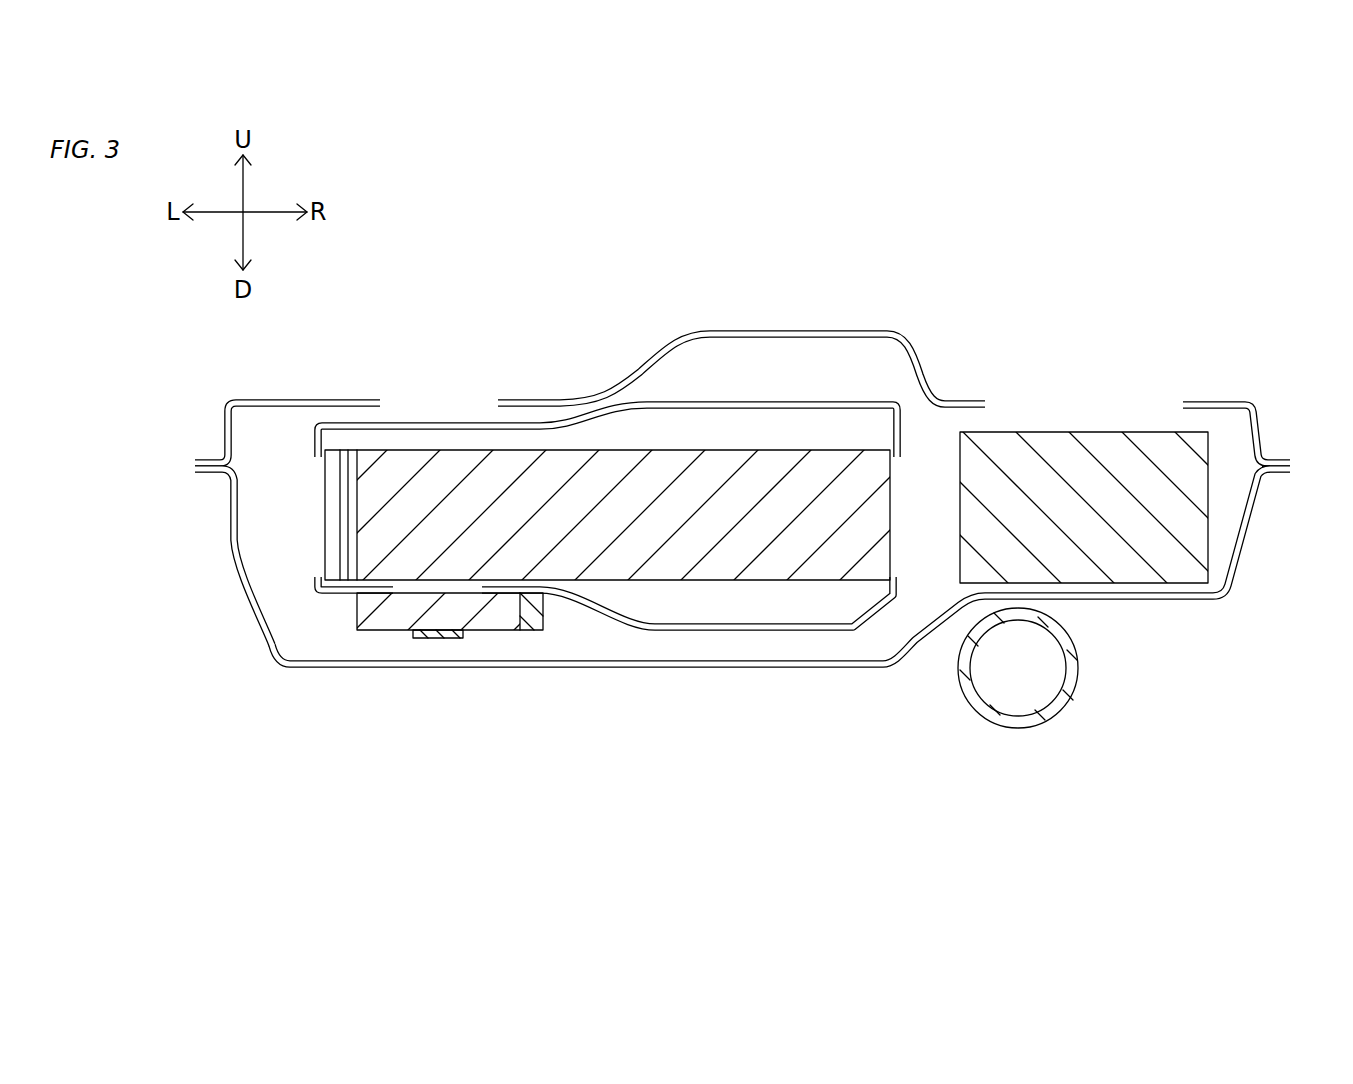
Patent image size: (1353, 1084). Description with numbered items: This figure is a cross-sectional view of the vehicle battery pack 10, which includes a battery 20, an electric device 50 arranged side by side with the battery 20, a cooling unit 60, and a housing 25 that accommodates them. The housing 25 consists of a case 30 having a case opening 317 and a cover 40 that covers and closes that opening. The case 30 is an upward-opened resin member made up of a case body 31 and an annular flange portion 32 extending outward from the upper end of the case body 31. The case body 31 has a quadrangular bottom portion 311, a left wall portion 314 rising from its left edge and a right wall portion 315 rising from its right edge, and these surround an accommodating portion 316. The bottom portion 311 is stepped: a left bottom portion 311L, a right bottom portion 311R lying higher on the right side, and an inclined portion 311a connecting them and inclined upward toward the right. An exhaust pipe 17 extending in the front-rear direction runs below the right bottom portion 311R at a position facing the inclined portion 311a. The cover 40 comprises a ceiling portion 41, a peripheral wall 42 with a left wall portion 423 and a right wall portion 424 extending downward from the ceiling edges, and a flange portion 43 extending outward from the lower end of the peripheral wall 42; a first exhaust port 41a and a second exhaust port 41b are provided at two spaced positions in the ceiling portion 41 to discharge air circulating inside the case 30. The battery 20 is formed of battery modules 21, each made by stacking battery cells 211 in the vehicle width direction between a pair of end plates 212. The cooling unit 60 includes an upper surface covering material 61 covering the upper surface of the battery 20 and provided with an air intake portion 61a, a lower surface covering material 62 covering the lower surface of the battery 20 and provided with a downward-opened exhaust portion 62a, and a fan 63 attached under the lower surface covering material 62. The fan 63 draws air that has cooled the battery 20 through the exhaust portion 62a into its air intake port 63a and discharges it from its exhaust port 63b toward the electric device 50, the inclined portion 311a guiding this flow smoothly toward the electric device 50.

The battery pack 10 is at (1143, 222).
The exhaust pipe 17 is at (1042, 729).
The battery 20 is at (602, 518).
The battery module 21 is at (618, 465).
The battery cell 211 is at (349, 556).
The end plate 212 is at (330, 550).
The housing 25 is at (268, 650).
The case 30 is at (736, 634).
The case body 31 is at (736, 634).
The bottom portion 311 is at (753, 687).
The left bottom portion 311L is at (378, 670).
The right bottom portion 311R is at (1178, 602).
The inclined portion 311a is at (930, 660).
The left wall portion 314 is at (235, 568).
The right wall portion 315 is at (1243, 548).
The accommodating portion 316 is at (597, 634).
The case opening 317 is at (263, 457).
The flange portion 32 is at (213, 473).
The cover 40 is at (679, 317).
The ceiling portion 41 is at (679, 317).
The first exhaust port 41a is at (1081, 405).
The second exhaust port 41b is at (413, 401).
The peripheral wall 42 is at (731, 411).
The left wall portion 423 is at (222, 430).
The right wall portion 424 is at (1260, 440).
The flange portion 43 is at (212, 458).
The electric device 50 is at (1205, 431).
The cooling unit 60 is at (599, 529).
The upper surface covering material 61 is at (607, 319).
The air intake portion 61a is at (812, 430).
The lower surface covering material 62 is at (605, 569).
The exhaust portion 62a is at (450, 583).
The fan 63 is at (426, 708).
The air intake port 63a is at (407, 640).
The exhaust port 63b is at (530, 632).